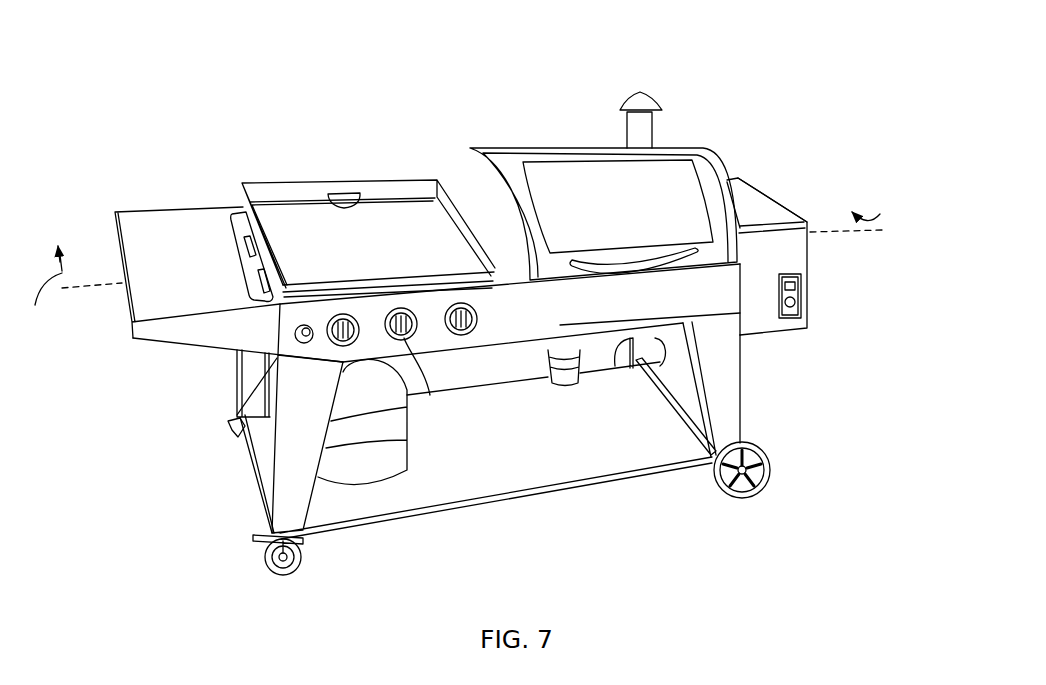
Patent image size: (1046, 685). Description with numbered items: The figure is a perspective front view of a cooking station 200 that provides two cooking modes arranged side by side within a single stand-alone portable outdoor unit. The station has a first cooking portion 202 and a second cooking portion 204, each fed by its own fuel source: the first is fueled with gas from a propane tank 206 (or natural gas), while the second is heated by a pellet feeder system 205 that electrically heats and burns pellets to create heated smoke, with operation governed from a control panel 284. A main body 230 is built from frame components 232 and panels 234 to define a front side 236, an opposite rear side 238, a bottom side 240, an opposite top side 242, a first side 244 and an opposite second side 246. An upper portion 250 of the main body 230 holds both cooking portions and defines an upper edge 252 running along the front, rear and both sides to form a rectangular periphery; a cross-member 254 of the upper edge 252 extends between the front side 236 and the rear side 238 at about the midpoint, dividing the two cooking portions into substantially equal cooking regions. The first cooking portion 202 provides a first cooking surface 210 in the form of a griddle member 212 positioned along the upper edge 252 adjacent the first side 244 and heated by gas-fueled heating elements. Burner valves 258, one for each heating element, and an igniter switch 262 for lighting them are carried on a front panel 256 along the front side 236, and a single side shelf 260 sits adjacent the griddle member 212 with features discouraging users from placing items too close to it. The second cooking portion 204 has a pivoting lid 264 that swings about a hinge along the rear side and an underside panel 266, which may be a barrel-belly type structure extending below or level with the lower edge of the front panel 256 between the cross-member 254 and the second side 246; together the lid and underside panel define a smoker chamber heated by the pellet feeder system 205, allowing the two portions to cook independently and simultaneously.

The cooking station 200 is at (824, 101).
The first cooking portion 202 is at (335, 143).
The second cooking portion 204 is at (568, 127).
The pellet feeder system 205 is at (812, 263).
The propane tank 206 is at (407, 432).
The first cooking surface 210 is at (418, 209).
The griddle member 212 is at (276, 190).
The main body 230 is at (752, 304).
The frame components 232 is at (237, 373).
The panels 234 is at (240, 414).
The front side 236 is at (814, 413).
The rear side 238 is at (190, 165).
The bottom side 240 is at (424, 567).
The top side 242 is at (465, 73).
The first side 244 is at (103, 358).
The second side 246 is at (835, 204).
The upper portion 250 is at (748, 276).
The upper edge 252 is at (498, 287).
The cross-member 254 is at (526, 284).
The front panel 256 is at (710, 305).
The burner valves 258 is at (430, 395).
The side shelf 260 is at (136, 205).
The igniter switch 262 is at (306, 342).
The pivoting lid 264 is at (722, 156).
The underside panel 266 is at (519, 347).
The control panel 284 is at (810, 300).